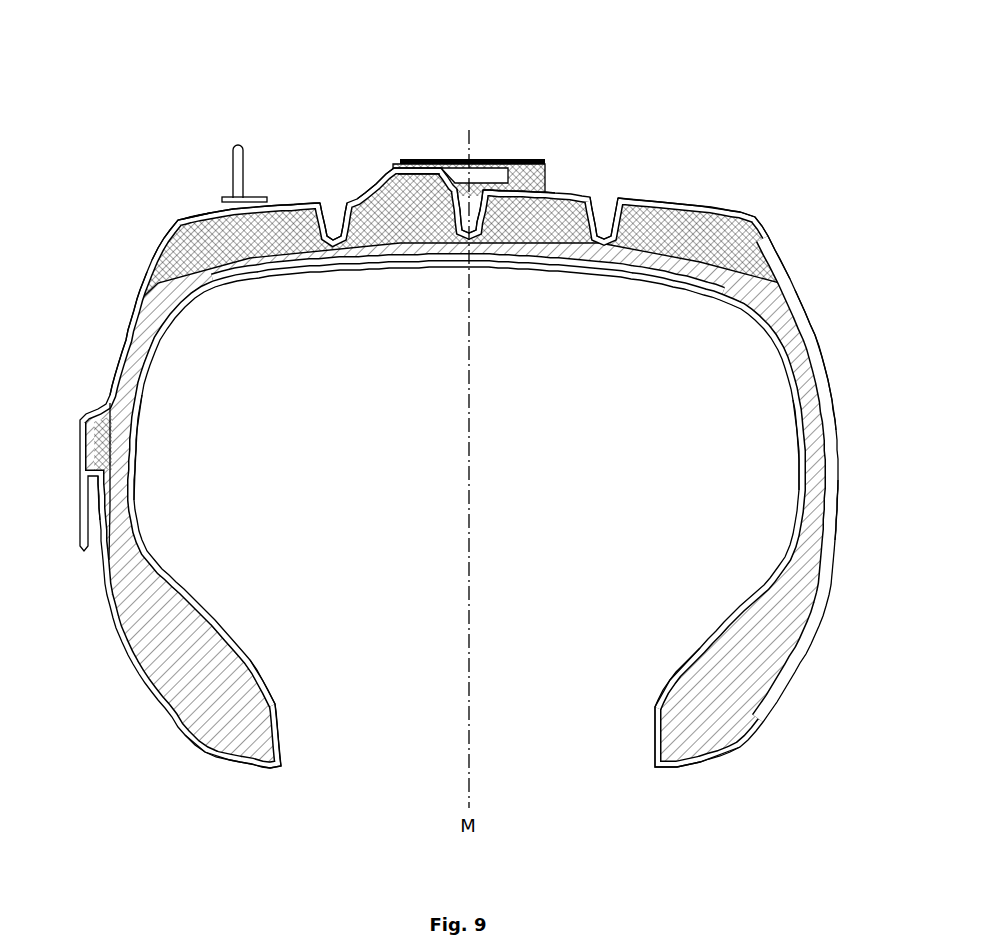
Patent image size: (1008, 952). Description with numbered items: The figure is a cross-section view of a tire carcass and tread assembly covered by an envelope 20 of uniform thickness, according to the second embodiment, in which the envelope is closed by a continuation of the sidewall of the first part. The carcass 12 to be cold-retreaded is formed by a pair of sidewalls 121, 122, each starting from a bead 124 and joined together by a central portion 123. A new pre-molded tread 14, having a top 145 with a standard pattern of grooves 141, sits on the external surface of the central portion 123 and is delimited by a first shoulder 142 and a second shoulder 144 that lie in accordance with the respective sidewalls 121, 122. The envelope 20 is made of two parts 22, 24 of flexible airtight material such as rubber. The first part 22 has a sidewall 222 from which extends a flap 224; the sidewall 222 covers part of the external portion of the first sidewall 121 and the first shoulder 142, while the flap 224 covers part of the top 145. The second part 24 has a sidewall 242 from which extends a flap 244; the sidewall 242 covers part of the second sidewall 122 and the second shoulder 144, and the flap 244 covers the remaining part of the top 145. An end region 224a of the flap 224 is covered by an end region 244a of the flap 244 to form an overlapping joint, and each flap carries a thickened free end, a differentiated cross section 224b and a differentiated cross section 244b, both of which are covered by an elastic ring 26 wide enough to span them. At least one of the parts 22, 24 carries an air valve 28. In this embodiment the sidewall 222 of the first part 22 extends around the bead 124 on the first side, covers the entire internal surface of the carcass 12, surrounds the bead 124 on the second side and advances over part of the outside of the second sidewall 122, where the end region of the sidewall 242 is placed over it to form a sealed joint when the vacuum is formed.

The tire carcass 12 is at (170, 640).
The pre-molded tread 14 is at (678, 227).
The envelope 20 is at (132, 285).
The first part 22 is at (830, 400).
The second part 24 is at (117, 367).
The elastic ring 26 is at (492, 168).
The air valve 28 is at (232, 150).
The first sidewall 121 is at (820, 472).
The second sidewall 122 is at (120, 463).
The central portion 123 is at (445, 247).
The bead 124 is at (247, 732).
The grooves 141 is at (331, 238).
The first shoulder 142 is at (760, 242).
The second shoulder 144 is at (177, 240).
The top 145 is at (725, 218).
The sidewall 222 is at (813, 357).
The flap 224 is at (640, 203).
The end region 224a is at (500, 193).
The differentiated cross section 224b is at (423, 183).
The sidewall 242 is at (132, 337).
The flap 244 is at (280, 196).
The end region 244a is at (420, 170).
The differentiated cross section 244b is at (527, 172).